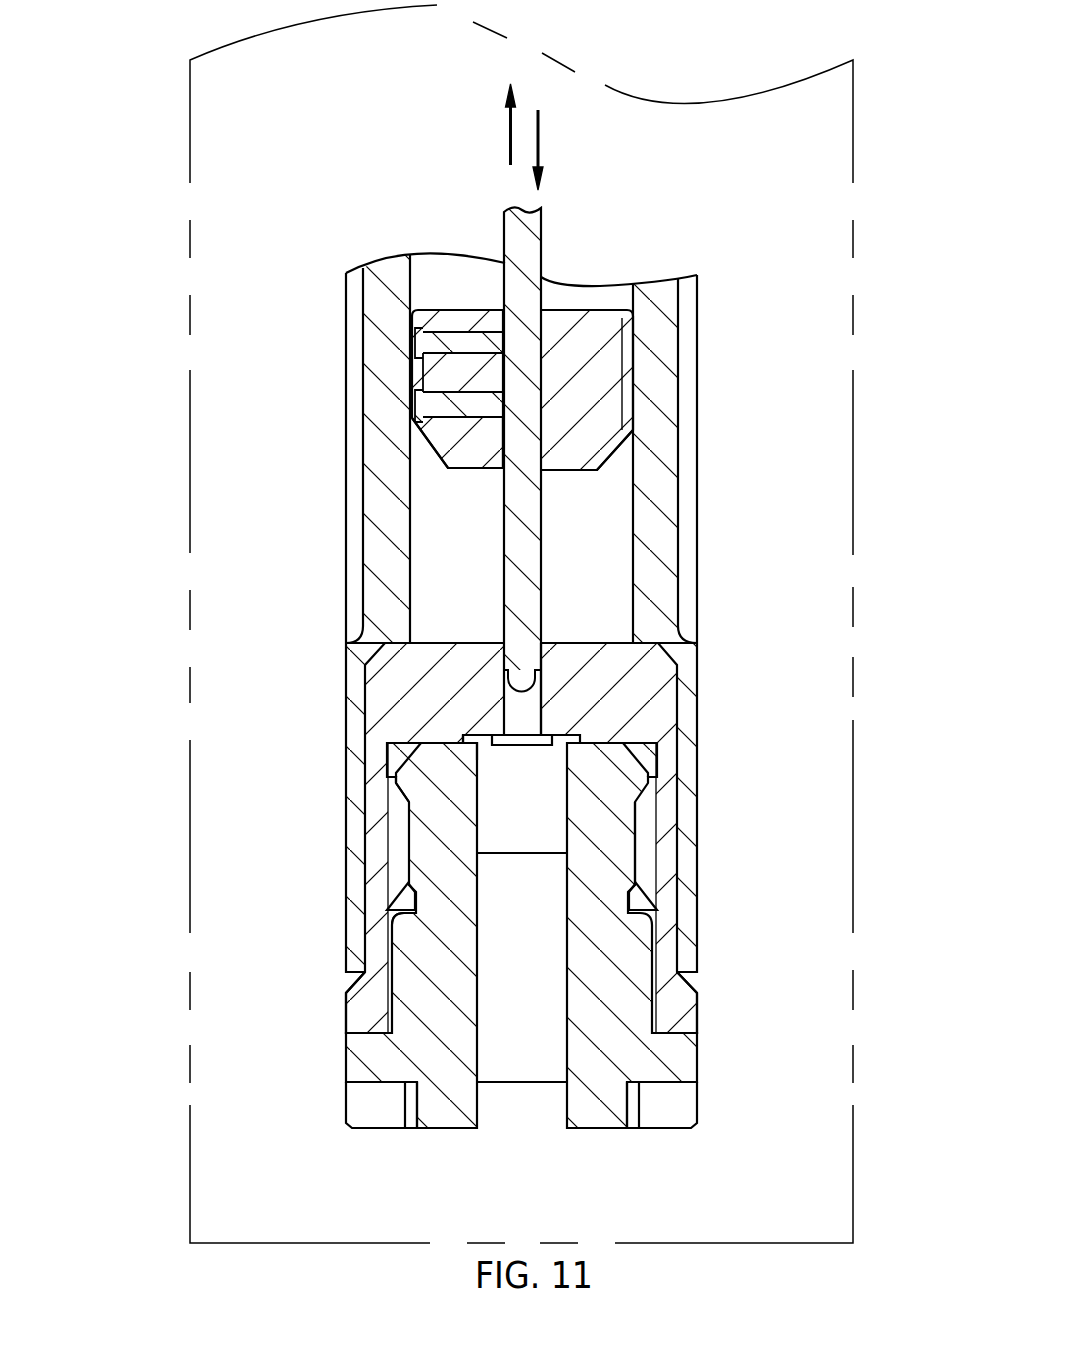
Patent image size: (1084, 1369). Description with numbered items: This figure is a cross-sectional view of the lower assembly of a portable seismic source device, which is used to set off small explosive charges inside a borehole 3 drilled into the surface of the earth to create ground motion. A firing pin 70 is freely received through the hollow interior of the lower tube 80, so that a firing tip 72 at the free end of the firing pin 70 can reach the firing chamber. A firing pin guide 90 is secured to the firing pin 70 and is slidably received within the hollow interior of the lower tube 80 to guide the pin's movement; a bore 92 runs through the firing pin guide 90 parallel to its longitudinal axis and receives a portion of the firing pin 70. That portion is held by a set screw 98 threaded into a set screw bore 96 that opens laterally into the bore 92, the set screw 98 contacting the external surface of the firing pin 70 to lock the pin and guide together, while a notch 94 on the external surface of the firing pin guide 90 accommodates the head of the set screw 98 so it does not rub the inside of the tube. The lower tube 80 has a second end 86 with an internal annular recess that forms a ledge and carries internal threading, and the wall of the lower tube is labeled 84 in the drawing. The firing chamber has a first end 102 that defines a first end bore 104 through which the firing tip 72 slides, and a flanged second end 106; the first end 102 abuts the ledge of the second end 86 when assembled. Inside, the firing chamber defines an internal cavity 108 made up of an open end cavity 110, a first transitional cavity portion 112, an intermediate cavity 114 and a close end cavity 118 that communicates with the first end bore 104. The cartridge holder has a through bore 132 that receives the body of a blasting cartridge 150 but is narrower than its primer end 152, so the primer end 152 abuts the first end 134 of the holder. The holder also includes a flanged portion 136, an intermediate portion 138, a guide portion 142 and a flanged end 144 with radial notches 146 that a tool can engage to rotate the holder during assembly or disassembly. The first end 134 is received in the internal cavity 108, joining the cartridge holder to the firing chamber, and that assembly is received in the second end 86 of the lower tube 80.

The borehole 3 is at (188, 137).
The firing pin 70 is at (541, 234).
The firing tip 72 is at (523, 745).
The lower tube 80 is at (395, 272).
The outer sleeve 84 is at (355, 318).
The second end 86 is at (677, 757).
The firing pin guide 90 is at (568, 300).
The bore 92 is at (543, 467).
The notch 94 is at (413, 368).
The set screw bore 96 is at (440, 425).
The set screw 98 is at (440, 340).
The first end 102 is at (452, 643).
The first end bore 104 is at (533, 710).
The flanged second end 106 is at (700, 993).
The internal cavity 108 is at (385, 1000).
The open end cavity 110 is at (657, 914).
The first transitional cavity portion 112 is at (635, 902).
The intermediate cavity 114 is at (635, 823).
The close end cavity 118 is at (397, 752).
The through bore 132 is at (502, 1112).
The first end 134 is at (653, 740).
The flanged portion 136 is at (393, 785).
The intermediate portion 138 is at (415, 815).
The guide portion 142 is at (402, 949).
The flanged end 144 is at (360, 1058).
The radial notches 146 is at (363, 1115).
The blasting cartridge 150 is at (523, 1058).
The primer end 152 is at (487, 740).